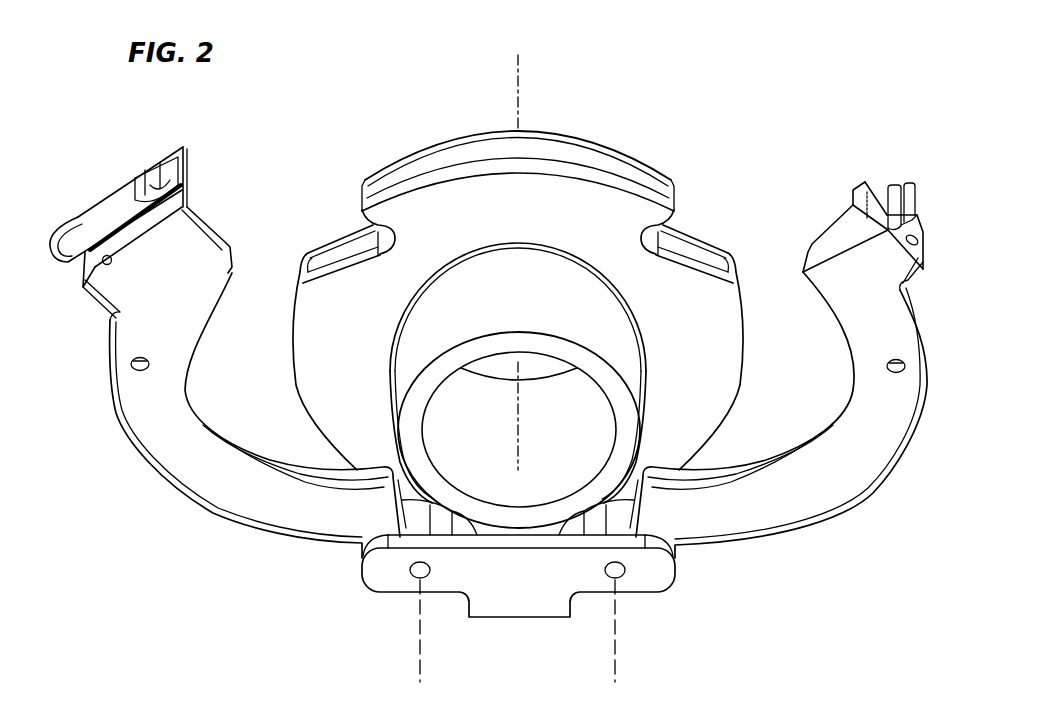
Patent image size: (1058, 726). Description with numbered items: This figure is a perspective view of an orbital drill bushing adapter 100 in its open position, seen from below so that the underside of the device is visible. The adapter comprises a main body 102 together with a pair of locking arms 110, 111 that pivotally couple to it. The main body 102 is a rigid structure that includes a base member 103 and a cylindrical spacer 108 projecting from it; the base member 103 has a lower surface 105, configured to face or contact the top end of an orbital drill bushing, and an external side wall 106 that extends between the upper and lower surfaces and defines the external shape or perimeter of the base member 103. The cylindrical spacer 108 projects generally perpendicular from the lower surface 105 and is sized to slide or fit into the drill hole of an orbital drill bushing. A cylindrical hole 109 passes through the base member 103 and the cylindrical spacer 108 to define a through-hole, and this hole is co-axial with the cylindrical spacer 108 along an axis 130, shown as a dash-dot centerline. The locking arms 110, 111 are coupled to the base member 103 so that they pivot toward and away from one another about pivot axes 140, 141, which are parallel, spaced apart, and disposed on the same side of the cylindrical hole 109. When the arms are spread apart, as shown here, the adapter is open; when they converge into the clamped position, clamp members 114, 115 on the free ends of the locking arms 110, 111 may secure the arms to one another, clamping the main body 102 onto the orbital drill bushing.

The orbital drill bushing adapter 100 is at (797, 109).
The main body 102 is at (498, 355).
The base member 103 is at (602, 142).
The lower surface 105 is at (718, 369).
The external side wall 106 is at (441, 150).
The cylindrical spacer 108 is at (530, 272).
The cylindrical hole 109 is at (437, 420).
The locking arm 110 is at (148, 465).
The locking arm 111 is at (832, 510).
The clamp member 114 is at (110, 210).
The clamp member 115 is at (920, 232).
The axis 130 is at (518, 72).
The pivot axis 140 is at (420, 643).
The pivot axis 141 is at (615, 638).